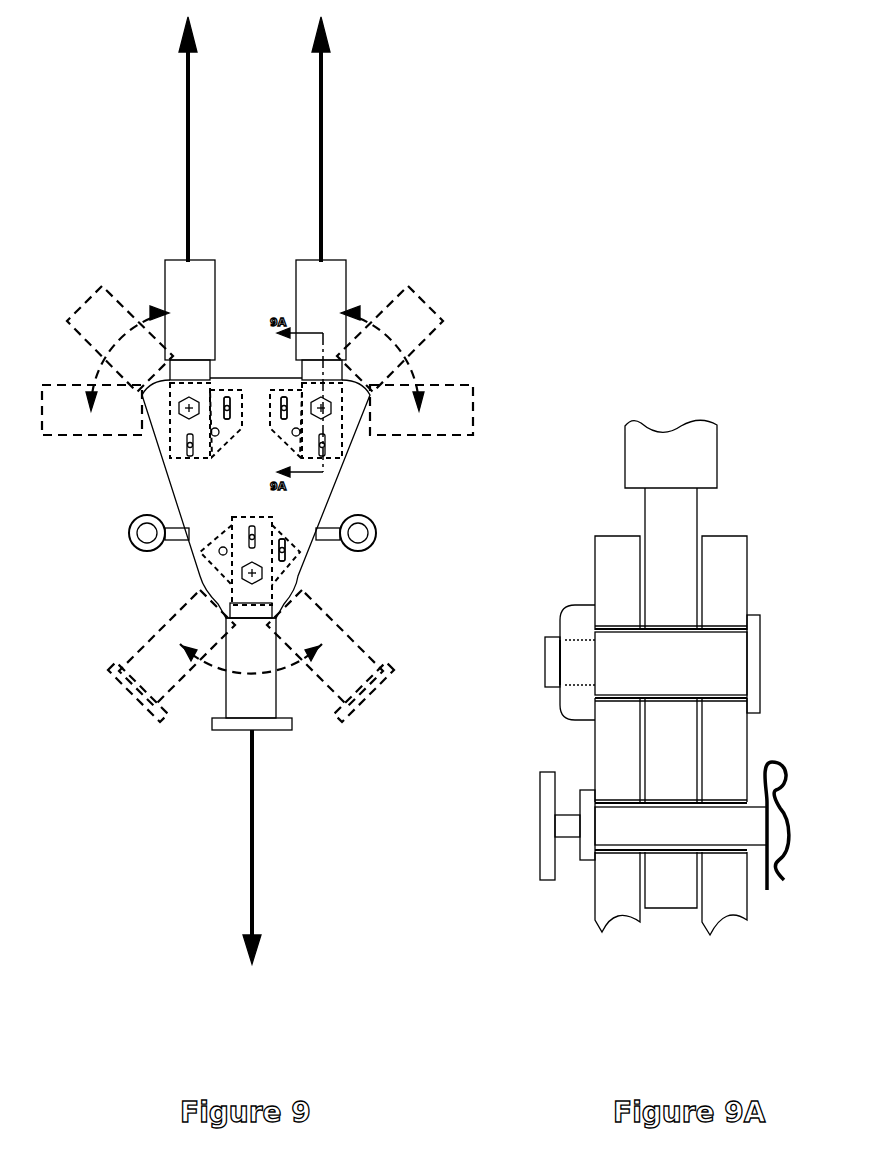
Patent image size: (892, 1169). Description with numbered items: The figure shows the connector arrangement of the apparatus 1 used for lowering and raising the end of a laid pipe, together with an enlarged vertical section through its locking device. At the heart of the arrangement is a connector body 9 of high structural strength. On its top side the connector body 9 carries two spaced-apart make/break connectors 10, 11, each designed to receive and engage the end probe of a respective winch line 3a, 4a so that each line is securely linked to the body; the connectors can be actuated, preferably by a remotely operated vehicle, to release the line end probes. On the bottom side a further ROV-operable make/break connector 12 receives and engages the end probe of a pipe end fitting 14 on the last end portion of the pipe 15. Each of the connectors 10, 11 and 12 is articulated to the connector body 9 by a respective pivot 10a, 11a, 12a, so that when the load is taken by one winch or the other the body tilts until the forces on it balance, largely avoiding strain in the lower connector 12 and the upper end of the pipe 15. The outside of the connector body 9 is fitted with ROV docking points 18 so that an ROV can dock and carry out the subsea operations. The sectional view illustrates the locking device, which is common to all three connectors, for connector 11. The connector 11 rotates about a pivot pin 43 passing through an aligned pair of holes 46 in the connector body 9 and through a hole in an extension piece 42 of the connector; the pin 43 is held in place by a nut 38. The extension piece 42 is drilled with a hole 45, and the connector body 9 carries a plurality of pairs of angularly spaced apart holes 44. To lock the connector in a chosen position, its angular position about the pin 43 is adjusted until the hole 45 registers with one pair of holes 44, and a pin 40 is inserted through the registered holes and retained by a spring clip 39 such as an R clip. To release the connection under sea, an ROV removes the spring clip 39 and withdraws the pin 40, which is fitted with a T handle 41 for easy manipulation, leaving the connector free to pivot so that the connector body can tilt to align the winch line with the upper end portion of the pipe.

In FIG. 9, the apparatus 1 is at (467, 362).
In FIG. 9, the line 3a is at (180, 160).
In FIG. 9, the line 4a is at (327, 163).
In FIG. 9, the connector body 9 is at (277, 496).
In FIG. 9A, the connector body 9 is at (618, 560).
In FIG. 9, the make/break connector 10 is at (175, 278).
In FIG. 9, the pivot 10a is at (187, 411).
In FIG. 9, the make/break connector 11 is at (337, 282).
In FIG. 9A, the make/break connector 11 is at (700, 448).
In FIG. 9, the pivot 11a is at (319, 411).
In FIG. 9, the make/break connector 12 is at (253, 690).
In FIG. 9, the pivot 12a is at (232, 584).
In FIG. 9, the pipe end fitting 14 is at (222, 724).
In FIG. 9, the pipe 15 is at (257, 787).
In FIG. 9, the ROV docking point 18 is at (135, 545).
In FIG. 9A, the nut 38 is at (586, 620).
In FIG. 9A, the spring clip 39 is at (789, 838).
In FIG. 9, the pin 40 is at (356, 598).
In FIG. 9A, the pin 40 is at (712, 827).
In FIG. 9, the T handle 41 is at (255, 479).
In FIG. 9A, the T handle 41 is at (548, 830).
In FIG. 9A, the extension piece 42 is at (664, 900).
In FIG. 9A, the pivot pin 43 is at (697, 668).
In FIG. 9, the holes 44 is at (220, 554).
In FIG. 9A, the holes 44 is at (710, 797).
In FIG. 9A, the hole 45 is at (673, 797).
In FIG. 9A, the holes 46 is at (722, 696).